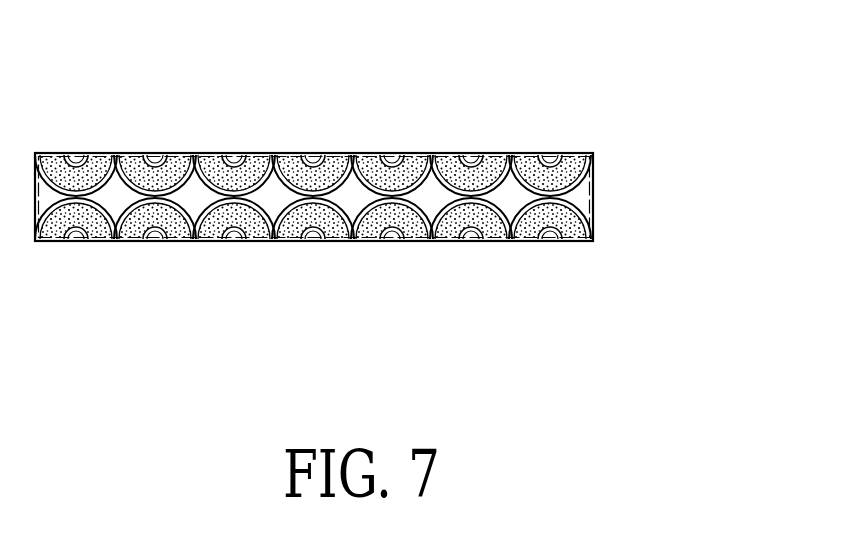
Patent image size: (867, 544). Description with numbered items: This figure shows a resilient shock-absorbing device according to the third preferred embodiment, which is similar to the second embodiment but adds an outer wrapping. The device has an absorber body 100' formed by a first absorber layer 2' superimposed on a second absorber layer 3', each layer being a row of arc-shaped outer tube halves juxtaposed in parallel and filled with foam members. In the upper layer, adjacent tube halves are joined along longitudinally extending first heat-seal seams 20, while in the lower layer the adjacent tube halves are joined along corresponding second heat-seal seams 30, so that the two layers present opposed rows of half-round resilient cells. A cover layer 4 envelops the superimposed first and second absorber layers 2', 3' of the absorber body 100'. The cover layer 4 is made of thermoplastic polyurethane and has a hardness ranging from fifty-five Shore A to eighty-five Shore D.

The cover layer 4 is at (593, 180).
The first heat-seal seam 20 is at (202, 153).
The second heat-seal seam 30 is at (202, 241).
The first absorber layer 2' is at (332, 104).
The second absorber layer 3' is at (284, 286).
The absorber body 100' is at (505, 106).